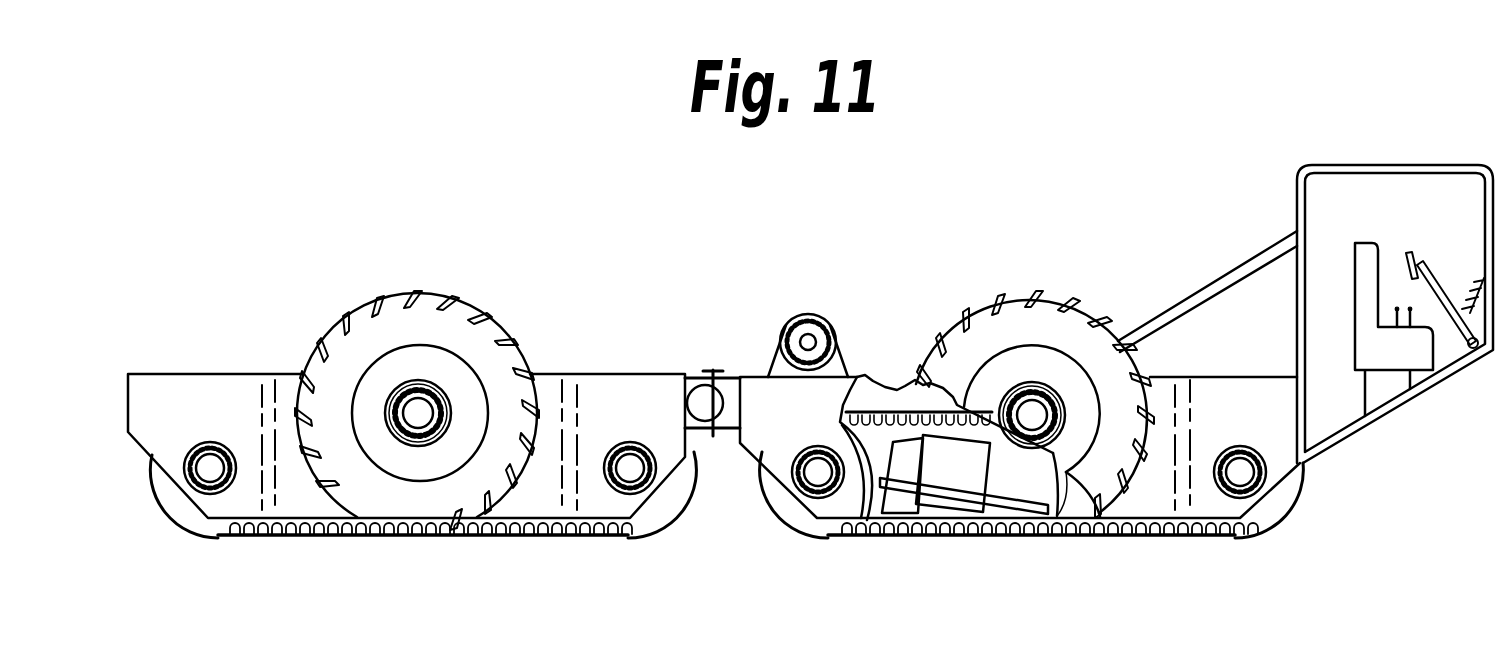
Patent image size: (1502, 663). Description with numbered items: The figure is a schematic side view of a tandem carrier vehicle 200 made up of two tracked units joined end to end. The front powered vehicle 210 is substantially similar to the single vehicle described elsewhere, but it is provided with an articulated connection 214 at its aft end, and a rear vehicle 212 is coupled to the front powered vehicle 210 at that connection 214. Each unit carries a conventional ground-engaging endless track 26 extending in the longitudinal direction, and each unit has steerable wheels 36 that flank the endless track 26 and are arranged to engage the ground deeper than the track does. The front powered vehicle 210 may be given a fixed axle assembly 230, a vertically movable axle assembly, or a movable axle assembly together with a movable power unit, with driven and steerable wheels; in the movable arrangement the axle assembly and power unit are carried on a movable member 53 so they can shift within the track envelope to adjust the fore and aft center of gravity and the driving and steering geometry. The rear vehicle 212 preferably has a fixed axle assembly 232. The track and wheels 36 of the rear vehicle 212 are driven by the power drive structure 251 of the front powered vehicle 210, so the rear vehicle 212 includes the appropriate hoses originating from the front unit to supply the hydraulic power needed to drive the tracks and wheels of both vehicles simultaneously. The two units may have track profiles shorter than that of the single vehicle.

The tandem carrier vehicle 200 is at (885, 268).
The front powered vehicle 210 is at (1082, 290).
The rear vehicle 212 is at (548, 352).
The articulated connection 214 is at (725, 378).
The wheel 36 is at (362, 296).
The endless track 26 is at (283, 533).
The fixed axle assembly 232 is at (437, 447).
The fixed axle assembly 230 is at (1067, 522).
The power drive structure 251 is at (935, 467).
The movable member 53 is at (987, 505).